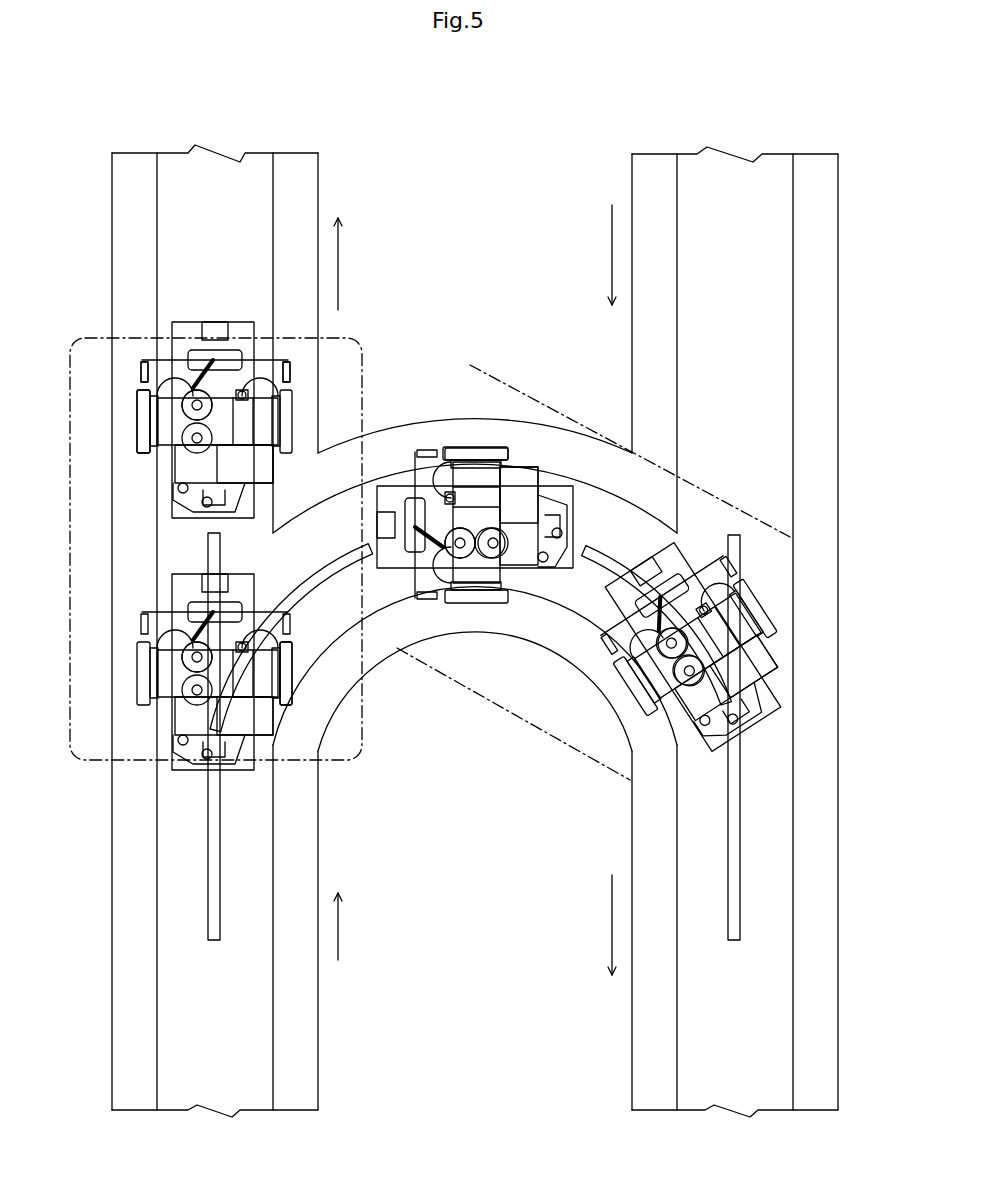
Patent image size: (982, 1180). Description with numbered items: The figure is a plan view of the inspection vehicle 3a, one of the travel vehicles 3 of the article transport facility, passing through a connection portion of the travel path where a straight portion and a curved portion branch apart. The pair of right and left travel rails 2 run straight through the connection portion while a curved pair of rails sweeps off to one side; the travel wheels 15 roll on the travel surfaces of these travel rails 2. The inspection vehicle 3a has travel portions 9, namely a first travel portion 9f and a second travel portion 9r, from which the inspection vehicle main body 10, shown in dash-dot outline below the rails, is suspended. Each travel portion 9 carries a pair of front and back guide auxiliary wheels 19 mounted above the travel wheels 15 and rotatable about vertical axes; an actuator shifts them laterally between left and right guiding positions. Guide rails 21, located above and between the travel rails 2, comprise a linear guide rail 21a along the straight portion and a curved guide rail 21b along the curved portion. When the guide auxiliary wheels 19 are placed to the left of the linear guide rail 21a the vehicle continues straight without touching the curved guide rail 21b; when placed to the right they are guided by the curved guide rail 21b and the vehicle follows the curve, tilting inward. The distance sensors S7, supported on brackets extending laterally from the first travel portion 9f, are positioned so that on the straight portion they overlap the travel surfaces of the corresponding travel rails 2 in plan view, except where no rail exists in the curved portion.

The travel rail 2 is at (393, 428).
The travel vehicle 3 is at (475, 642).
The inspection vehicle 3a is at (345, 780).
The travel portion 9 is at (438, 569).
The first travel portion 9f is at (160, 496).
The second travel portion 9r is at (95, 814).
The inspection vehicle main body 10 is at (338, 338).
The travel wheel 15 is at (468, 447).
The guide auxiliary wheel 19 is at (185, 405).
The guide rail 21 is at (456, 697).
The linear guide rail 21a is at (208, 912).
The curved guide rail 21b is at (385, 703).
The distance sensor S7 is at (140, 372).